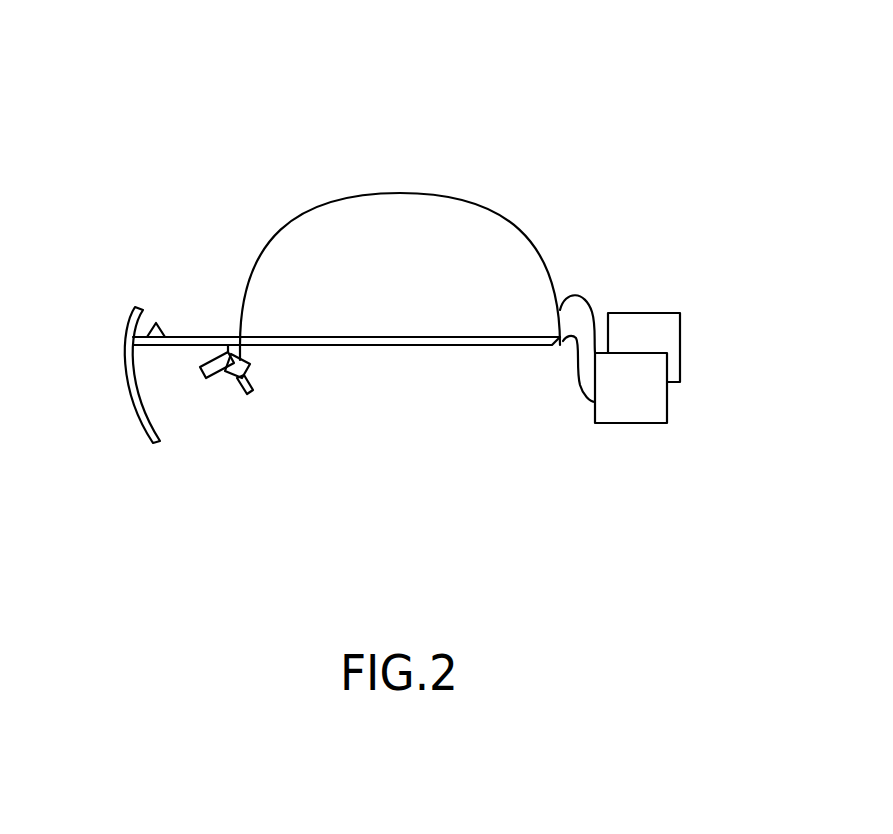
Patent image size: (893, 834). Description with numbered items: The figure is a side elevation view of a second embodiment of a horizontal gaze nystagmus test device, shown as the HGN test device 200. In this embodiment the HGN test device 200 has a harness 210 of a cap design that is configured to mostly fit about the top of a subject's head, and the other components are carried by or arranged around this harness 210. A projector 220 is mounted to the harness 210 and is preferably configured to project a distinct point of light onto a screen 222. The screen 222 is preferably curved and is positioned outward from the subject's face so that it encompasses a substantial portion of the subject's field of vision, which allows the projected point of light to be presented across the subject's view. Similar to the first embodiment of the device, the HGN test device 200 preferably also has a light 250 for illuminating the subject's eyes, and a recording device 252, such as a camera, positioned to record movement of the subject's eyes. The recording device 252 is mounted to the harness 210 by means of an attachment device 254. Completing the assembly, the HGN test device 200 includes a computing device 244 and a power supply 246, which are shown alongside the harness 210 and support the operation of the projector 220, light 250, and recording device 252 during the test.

The HGN test device 200 is at (350, 96).
The harness 210 is at (443, 195).
The projector 220 is at (206, 378).
The screen 222 is at (131, 393).
The computing device 244 is at (667, 405).
The power supply 246 is at (680, 343).
The light 250 is at (156, 323).
The recording device 252 is at (250, 393).
The attachment device 254 is at (249, 363).